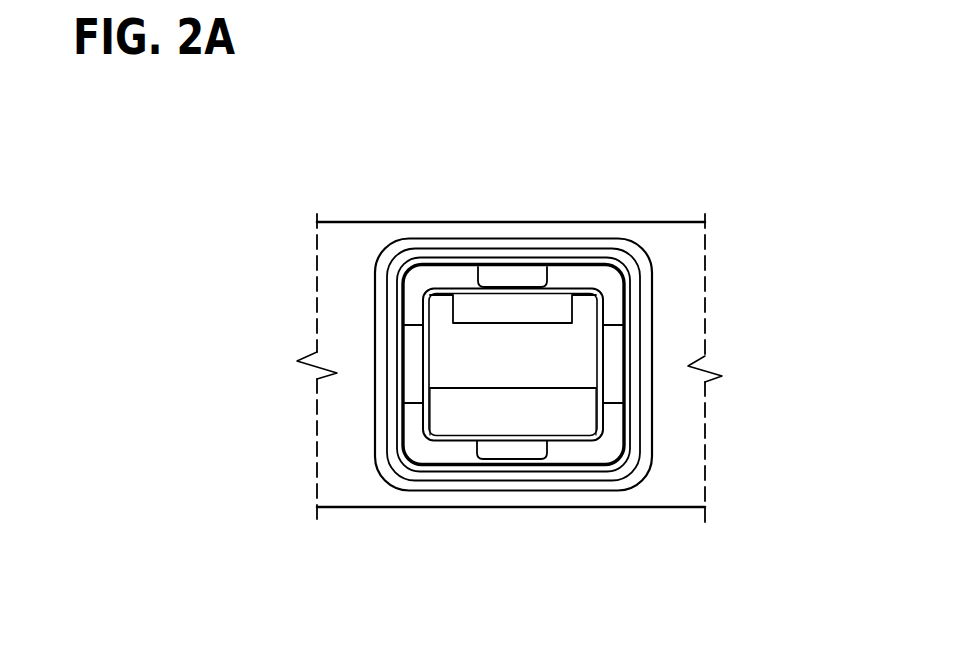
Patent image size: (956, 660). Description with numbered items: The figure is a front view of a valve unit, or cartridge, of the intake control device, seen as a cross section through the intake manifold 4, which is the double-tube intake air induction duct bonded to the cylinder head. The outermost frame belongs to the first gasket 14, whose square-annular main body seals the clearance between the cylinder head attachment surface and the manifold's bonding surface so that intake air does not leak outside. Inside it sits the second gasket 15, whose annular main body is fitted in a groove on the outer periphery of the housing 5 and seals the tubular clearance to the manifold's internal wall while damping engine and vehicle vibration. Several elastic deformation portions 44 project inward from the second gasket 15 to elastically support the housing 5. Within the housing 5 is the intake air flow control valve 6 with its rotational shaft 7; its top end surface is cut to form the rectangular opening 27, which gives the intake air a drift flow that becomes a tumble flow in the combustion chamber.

The intake manifold 4 is at (346, 222).
The first gasket 14 is at (409, 239).
The second gasket 15 is at (578, 265).
The housing 5 is at (595, 450).
The intake air flow control valve 6 is at (521, 370).
The rotational shaft 7 is at (455, 430).
The opening 27 is at (460, 310).
The elastic deformation portions 44 is at (512, 276).